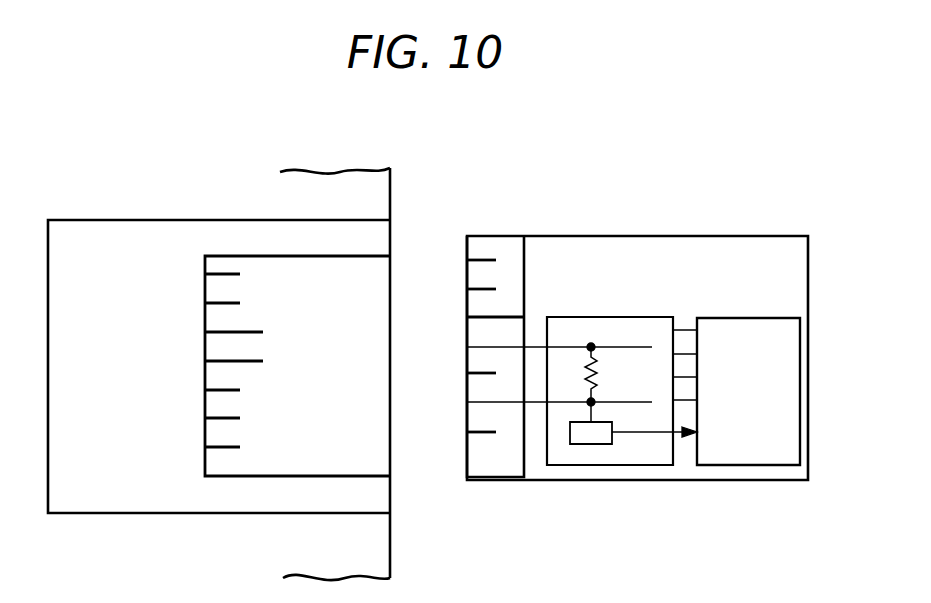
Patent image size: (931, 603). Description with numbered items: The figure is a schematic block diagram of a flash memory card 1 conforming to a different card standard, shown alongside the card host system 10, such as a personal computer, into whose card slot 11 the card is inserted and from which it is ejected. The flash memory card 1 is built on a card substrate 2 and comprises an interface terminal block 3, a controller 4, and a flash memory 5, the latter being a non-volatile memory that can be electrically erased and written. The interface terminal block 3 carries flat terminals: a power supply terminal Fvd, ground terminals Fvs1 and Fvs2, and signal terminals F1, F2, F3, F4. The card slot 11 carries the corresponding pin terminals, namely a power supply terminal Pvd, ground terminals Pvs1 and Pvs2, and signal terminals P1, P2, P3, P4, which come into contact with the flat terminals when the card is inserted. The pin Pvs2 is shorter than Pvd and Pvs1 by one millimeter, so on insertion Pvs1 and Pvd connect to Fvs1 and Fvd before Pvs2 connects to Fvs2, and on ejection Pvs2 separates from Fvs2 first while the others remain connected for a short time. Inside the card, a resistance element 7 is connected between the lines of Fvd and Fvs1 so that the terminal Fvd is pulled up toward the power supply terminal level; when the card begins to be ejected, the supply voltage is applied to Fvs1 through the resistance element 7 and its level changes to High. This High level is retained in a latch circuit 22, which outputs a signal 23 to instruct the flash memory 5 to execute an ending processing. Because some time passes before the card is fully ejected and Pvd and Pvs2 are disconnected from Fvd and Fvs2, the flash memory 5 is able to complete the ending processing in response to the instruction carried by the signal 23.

The flash memory card 1 is at (629, 355).
The card substrate 2 is at (802, 264).
The interface terminal block 3 is at (497, 479).
The controller 4 is at (652, 320).
The flash memory 5 is at (762, 463).
The resistance element 7 is at (600, 372).
The card host system 10 is at (381, 184).
The card slot 11 is at (76, 218).
The latch circuit 22 is at (587, 446).
The signal 23 is at (652, 436).
The signal terminal P1 is at (207, 445).
The signal terminal P2 is at (207, 388).
The signal terminal P3 is at (207, 301).
The signal terminal P4 is at (207, 272).
The ground terminal Pvs1 is at (207, 330).
The ground terminal Pvs2 is at (207, 416).
The power supply terminal Pvd is at (207, 359).
The signal terminal F1 is at (478, 434).
The signal terminal F2 is at (474, 372).
The signal terminal F3 is at (480, 288).
The signal terminal F4 is at (476, 258).
The ground terminal Fvs1 is at (480, 316).
The ground terminal Fvs2 is at (476, 404).
The power supply terminal Fvd is at (475, 346).